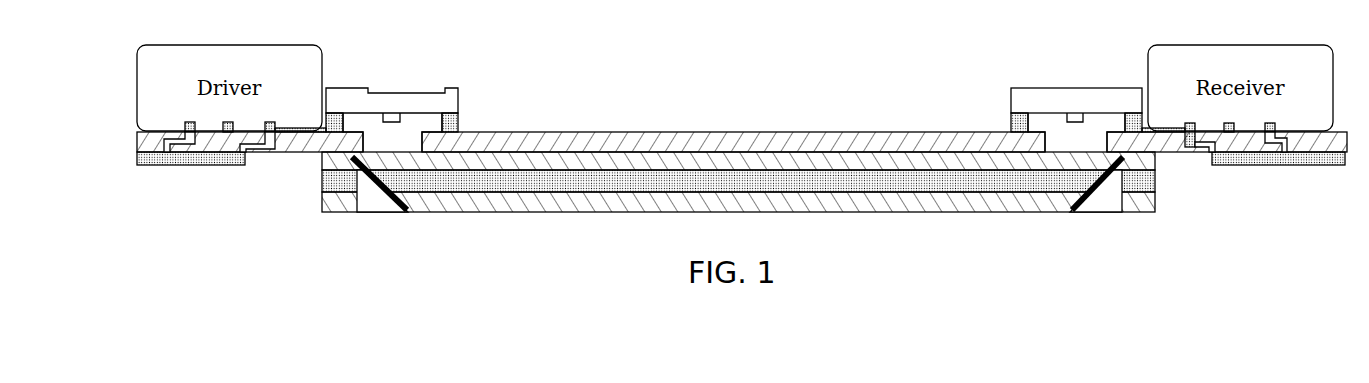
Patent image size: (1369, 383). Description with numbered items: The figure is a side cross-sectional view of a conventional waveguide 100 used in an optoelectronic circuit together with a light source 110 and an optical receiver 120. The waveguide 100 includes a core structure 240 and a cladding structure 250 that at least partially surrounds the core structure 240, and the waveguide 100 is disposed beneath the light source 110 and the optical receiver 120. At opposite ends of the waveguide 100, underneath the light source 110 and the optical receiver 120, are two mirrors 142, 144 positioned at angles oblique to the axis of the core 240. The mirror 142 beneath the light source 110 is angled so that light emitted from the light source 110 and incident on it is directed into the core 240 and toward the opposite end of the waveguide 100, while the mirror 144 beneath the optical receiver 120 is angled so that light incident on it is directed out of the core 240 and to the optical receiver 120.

The waveguide 100 is at (740, 255).
The light source 110 is at (403, 91).
The optical receiver 120 is at (1075, 88).
The mirror 142 is at (382, 192).
The mirror 144 is at (1098, 192).
The core structure 240 is at (490, 192).
The cladding structure 250 is at (597, 213).